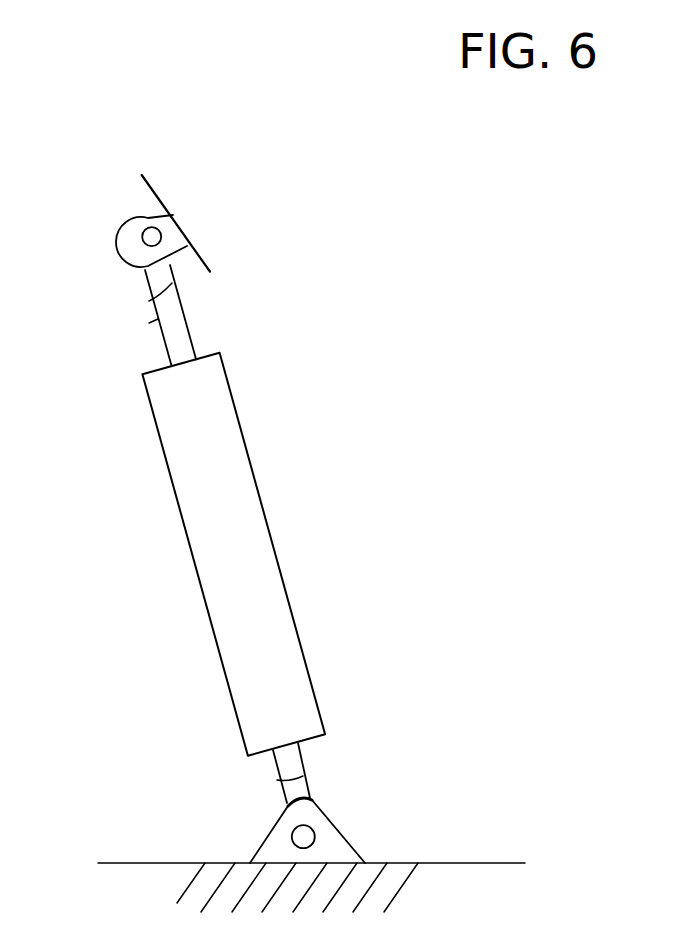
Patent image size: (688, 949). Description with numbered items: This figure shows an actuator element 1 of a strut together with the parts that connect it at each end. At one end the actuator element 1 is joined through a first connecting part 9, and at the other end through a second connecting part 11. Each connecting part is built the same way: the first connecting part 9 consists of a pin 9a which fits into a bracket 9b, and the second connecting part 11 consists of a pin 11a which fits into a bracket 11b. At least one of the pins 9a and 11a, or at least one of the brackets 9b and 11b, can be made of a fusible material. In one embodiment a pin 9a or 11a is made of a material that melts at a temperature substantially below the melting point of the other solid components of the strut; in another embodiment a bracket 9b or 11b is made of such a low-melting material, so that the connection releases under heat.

The actuator element 1 is at (290, 547).
The first connecting part 9 is at (177, 214).
The pin 9a is at (142, 238).
The bracket 9b is at (138, 213).
The second connecting part 11 is at (348, 842).
The pin 11a is at (314, 836).
The bracket 11b is at (273, 828).